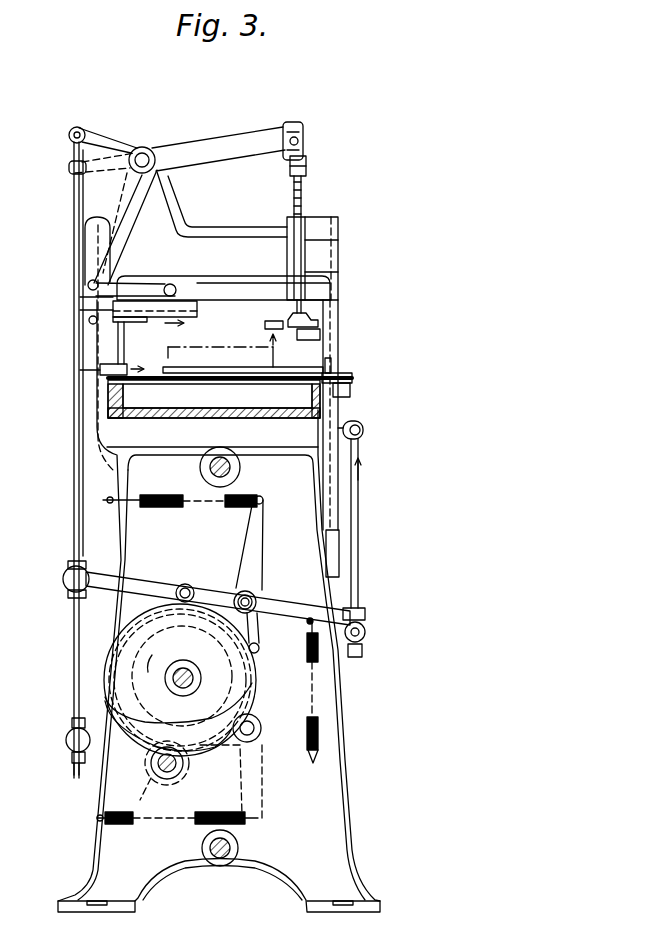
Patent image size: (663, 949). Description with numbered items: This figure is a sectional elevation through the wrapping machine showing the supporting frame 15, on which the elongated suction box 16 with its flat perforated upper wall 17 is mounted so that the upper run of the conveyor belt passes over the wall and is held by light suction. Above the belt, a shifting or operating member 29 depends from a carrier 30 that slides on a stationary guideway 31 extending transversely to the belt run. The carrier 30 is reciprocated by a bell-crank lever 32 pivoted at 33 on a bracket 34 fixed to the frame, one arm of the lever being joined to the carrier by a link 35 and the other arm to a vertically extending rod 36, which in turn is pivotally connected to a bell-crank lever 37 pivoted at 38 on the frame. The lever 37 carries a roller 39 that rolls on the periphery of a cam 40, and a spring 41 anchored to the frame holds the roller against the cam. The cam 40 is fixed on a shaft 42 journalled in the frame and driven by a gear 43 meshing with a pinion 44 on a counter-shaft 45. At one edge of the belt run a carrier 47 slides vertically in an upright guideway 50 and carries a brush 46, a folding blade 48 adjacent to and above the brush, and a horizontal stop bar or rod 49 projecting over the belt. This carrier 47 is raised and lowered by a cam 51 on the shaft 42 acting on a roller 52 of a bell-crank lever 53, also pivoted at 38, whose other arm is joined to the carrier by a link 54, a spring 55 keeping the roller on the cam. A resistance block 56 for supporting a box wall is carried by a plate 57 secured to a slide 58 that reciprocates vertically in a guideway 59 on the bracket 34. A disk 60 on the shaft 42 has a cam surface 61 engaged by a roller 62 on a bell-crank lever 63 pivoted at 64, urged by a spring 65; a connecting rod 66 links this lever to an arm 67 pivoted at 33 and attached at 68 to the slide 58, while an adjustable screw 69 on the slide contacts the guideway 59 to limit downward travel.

The supporting frame 15 is at (345, 746).
The suction box 16 is at (197, 418).
The perforated upper wall 17 is at (240, 374).
The shifting or operating member 29 is at (128, 366).
The carrier 30 is at (196, 317).
The stationary guideway 31 is at (240, 299).
The bell-crank lever 32 is at (131, 204).
The pivot 33 is at (150, 152).
The bracket 34 is at (178, 181).
The link 35 is at (150, 285).
The vertically extending rod 36 is at (75, 338).
The bell-crank lever 37 is at (148, 578).
The pivot 38 is at (258, 599).
The roller 39 is at (186, 584).
The cam 40 is at (256, 678).
The spring 41 is at (160, 495).
The shaft 42 is at (190, 689).
The gear 43 is at (208, 762).
The pinion 44 is at (186, 781).
The counter-shaft 45 is at (152, 781).
The brush 46 is at (320, 388).
The carrier 47 is at (340, 412).
The folding blade 48 is at (352, 376).
The stop bar or rod 49 is at (229, 367).
The upright guideway 50 is at (341, 537).
The cam 51 is at (74, 727).
The roller 52 is at (260, 649).
The bell-crank lever 53 is at (358, 608).
The link 54 is at (360, 498).
The spring 55 is at (320, 719).
The resistance member or block 56 is at (322, 338).
The plate 57 is at (318, 323).
The slide 58 is at (306, 212).
The guideway 59 is at (339, 256).
The disk 60 is at (128, 640).
The cam surface 61 is at (135, 668).
The roller 62 is at (152, 762).
The bell-crank lever 63 is at (79, 772).
The pivot 64 is at (259, 728).
The spring 65 is at (148, 830).
The connecting rod 66 is at (68, 622).
The arm 67 is at (226, 143).
The pivotal attachment 68 is at (301, 135).
The threaded member or screw 69 is at (306, 189).